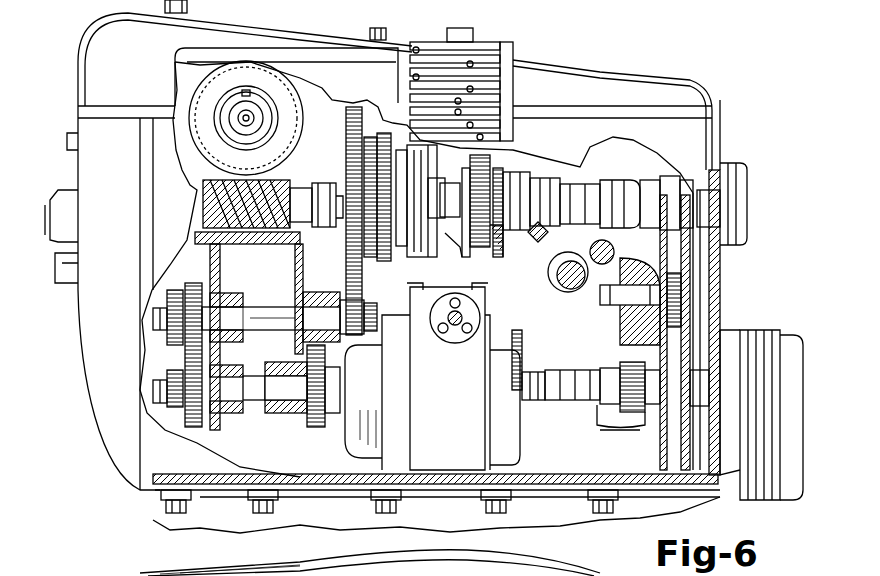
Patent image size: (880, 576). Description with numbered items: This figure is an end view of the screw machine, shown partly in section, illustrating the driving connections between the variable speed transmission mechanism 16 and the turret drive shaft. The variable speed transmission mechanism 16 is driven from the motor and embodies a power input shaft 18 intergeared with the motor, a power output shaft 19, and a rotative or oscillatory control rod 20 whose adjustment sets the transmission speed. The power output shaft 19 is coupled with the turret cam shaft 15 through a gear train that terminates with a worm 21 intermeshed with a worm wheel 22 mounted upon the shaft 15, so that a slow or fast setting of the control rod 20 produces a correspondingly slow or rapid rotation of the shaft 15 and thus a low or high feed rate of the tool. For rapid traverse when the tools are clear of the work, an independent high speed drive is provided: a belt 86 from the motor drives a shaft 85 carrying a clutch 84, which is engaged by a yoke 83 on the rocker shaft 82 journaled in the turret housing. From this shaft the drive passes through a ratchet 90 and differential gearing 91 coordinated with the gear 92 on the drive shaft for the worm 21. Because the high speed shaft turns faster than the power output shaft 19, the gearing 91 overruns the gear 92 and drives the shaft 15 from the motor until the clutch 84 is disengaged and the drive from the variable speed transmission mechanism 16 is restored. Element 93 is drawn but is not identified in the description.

The shaft 15 is at (240, 125).
The worm wheel 22 is at (203, 195).
The worm 21 is at (245, 250).
The gear 92 is at (350, 265).
The differential gearing 91 is at (380, 262).
The ratchet 90 is at (425, 258).
The gear 93 is at (360, 300).
The clutch 84 is at (524, 230).
The yoke 83 is at (548, 270).
The shaft 85 is at (622, 192).
The rocker shaft 82 is at (592, 283).
The control rod 20 is at (475, 315).
The variable speed transmission mechanism 16 is at (480, 365).
The power input shaft 18 is at (572, 400).
The power output shaft 19 is at (258, 395).
The belt 86 is at (750, 450).